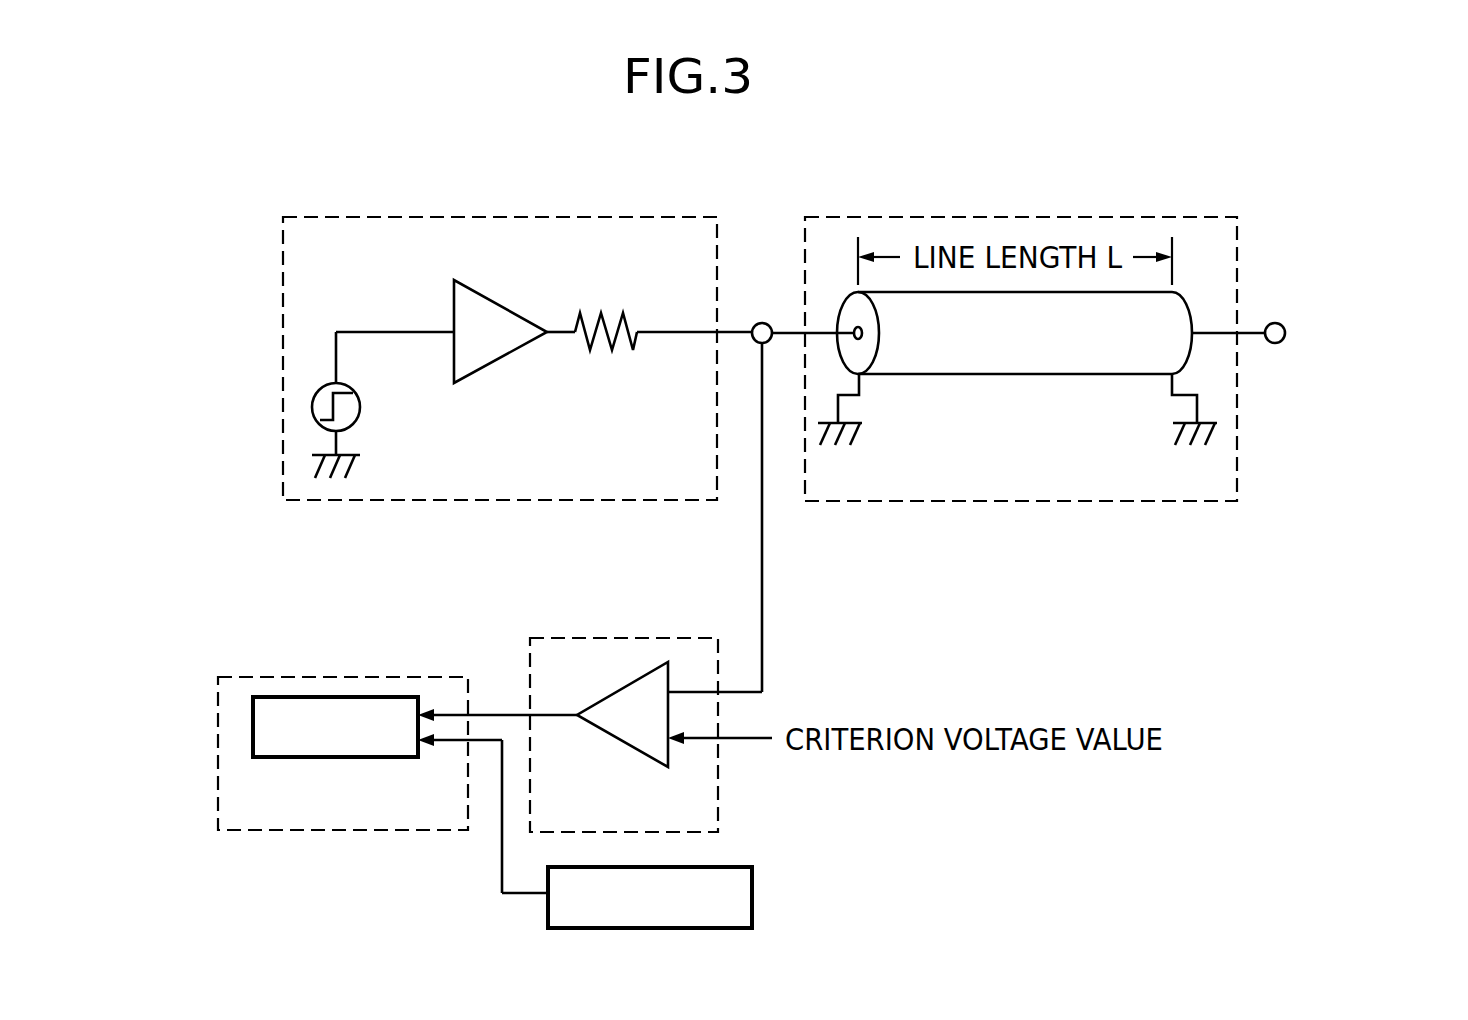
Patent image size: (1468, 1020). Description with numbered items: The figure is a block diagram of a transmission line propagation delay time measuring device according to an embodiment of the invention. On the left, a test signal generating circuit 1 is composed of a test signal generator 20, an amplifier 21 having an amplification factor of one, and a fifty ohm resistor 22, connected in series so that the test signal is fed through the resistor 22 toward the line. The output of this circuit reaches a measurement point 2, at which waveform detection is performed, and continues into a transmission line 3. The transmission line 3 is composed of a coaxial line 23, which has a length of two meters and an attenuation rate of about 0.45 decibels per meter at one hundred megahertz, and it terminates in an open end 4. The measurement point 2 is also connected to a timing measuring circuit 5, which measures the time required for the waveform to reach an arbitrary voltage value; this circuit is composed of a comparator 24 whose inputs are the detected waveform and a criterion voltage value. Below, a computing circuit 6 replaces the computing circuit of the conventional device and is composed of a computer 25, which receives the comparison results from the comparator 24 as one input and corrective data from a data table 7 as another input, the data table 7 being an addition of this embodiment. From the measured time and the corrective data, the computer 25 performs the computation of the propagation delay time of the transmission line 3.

The test signal generating circuit 1 is at (312, 500).
The measurement point 2 is at (762, 322).
The transmission line 3 is at (922, 501).
The open end 4 is at (1275, 343).
The timing measuring circuit 5 is at (718, 825).
The computing circuit 6 is at (240, 674).
The data table 7 is at (752, 897).
The test signal generator 20 is at (357, 420).
The amplifier 21 is at (454, 298).
The resistor 22 is at (585, 346).
The coaxial line 23 is at (915, 374).
The comparator 24 is at (593, 727).
The computer 25 is at (370, 757).